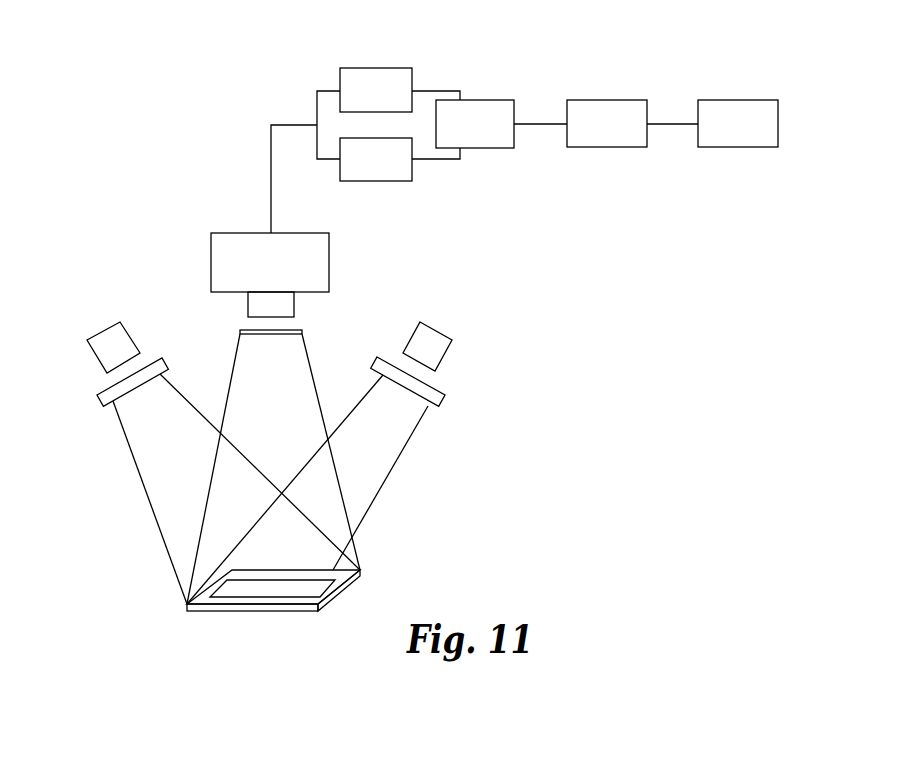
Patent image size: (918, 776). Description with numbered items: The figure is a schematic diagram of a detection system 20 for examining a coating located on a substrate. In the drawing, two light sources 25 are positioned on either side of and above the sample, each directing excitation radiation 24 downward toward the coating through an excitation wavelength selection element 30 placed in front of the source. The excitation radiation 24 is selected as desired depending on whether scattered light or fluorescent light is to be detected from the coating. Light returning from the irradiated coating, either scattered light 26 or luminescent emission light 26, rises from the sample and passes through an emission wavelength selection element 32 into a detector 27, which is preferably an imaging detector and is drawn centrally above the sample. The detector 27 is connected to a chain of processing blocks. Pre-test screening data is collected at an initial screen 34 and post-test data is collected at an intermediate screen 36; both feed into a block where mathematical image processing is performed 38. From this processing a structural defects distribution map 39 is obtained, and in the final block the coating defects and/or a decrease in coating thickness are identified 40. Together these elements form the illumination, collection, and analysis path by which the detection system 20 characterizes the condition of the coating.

The detection system 20 is at (190, 92).
The excitation radiation 24 is at (181, 450).
The light source 25 is at (100, 331).
The scattered light or luminescent emission light 26 is at (273, 416).
The detector 27 is at (211, 260).
The excitation wavelength selection element 30 is at (168, 361).
The emission wavelength selection element 32 is at (302, 333).
The initial screen 34 is at (386, 102).
The intermediate screen 36 is at (386, 170).
The mathematical image processing 38 is at (487, 136).
The structural defects distribution map 39 is at (619, 136).
The identification of coating defects and/or decrease in coating thickness 40 is at (750, 136).